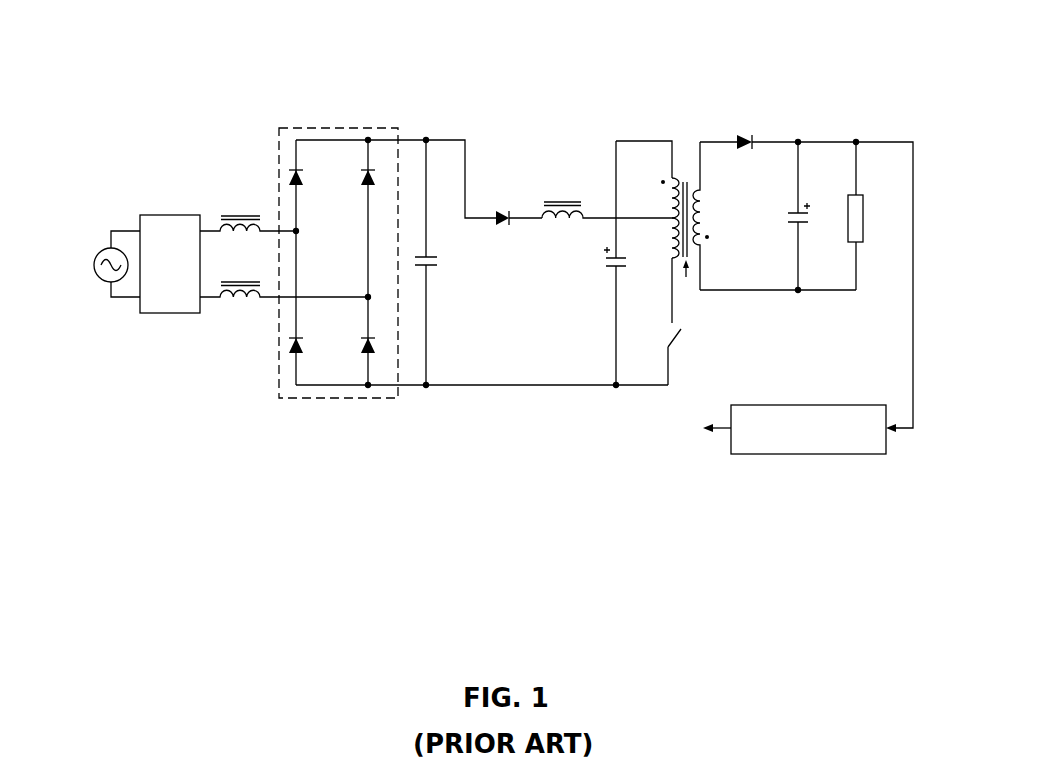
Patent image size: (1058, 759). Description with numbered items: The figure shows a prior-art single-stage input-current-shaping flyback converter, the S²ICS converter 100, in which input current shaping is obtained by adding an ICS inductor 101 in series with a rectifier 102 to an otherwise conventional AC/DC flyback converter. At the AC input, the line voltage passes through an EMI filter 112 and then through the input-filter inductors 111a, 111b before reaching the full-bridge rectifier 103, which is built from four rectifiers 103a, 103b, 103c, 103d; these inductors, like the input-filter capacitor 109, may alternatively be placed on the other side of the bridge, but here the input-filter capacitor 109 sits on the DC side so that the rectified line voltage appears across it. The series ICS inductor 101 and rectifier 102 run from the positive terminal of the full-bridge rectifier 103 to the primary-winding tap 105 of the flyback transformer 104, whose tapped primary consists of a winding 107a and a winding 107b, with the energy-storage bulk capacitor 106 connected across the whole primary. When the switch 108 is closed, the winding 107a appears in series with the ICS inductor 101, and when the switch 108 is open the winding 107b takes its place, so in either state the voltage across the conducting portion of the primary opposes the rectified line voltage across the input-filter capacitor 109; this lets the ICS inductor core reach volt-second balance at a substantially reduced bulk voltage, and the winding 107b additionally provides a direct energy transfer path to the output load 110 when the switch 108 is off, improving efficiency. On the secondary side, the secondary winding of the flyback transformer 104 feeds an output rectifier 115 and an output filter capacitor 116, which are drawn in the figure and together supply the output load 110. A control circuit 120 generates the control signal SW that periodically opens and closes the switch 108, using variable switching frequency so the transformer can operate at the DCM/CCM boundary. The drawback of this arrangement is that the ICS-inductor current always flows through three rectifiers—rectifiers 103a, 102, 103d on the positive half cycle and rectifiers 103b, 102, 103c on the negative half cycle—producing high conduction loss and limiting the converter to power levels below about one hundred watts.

The S²ICS converter 100 is at (579, 62).
The ICS inductor 101 is at (562, 222).
The rectifier 102 is at (502, 224).
The full-bridge rectifier 103 is at (388, 124).
The rectifier 103a is at (314, 187).
The rectifier 103b is at (360, 187).
The rectifier 103c is at (303, 337).
The rectifier 103d is at (363, 337).
The flyback transformer 104 is at (680, 220).
The primary-winding tap 105 is at (636, 217).
The energy-storage (bulk) capacitor 106 is at (623, 270).
The winding 107a is at (668, 243).
The winding 107b is at (668, 190).
The switch 108 is at (670, 331).
The input-filter capacitor 109 is at (433, 272).
The output load 110 is at (865, 203).
The input-filter inductor 111a is at (242, 233).
The input-filter inductor 111b is at (242, 299).
The EMI filter 112 is at (173, 214).
The output diode D_F 115 is at (753, 138).
The output filter capacitor C_F 116 is at (803, 224).
The control circuit 120 is at (808, 403).